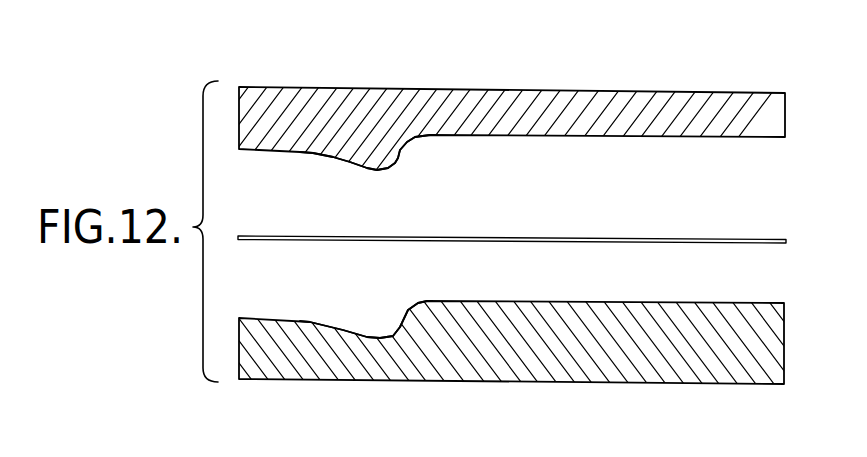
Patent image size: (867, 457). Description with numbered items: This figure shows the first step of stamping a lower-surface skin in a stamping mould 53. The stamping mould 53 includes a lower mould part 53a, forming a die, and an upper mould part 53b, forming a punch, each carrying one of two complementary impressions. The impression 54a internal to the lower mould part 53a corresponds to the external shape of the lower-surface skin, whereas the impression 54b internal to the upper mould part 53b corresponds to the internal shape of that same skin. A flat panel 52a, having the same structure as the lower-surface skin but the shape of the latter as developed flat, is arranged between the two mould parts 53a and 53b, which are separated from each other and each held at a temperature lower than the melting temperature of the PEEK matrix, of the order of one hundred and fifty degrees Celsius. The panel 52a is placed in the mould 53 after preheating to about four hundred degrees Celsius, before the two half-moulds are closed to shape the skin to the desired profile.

The stamping mould 53 is at (243, 82).
The lower mould part 53a is at (320, 357).
The upper mould part 53b is at (367, 110).
The impression 54a is at (332, 322).
The impression 54b is at (313, 153).
The flat panel 52a is at (511, 240).